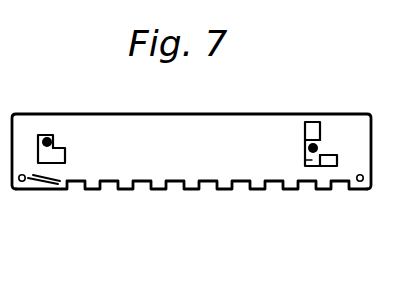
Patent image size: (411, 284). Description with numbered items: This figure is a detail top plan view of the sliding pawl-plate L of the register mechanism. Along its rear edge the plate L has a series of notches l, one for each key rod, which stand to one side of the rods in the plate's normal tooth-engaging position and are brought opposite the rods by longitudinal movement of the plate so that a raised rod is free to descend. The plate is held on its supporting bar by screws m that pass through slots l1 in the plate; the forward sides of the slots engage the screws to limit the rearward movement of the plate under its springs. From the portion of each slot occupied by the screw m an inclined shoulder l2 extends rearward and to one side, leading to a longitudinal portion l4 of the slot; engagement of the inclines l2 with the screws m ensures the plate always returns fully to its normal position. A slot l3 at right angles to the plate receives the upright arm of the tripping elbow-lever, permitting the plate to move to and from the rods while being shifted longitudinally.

The pawl-plate L is at (191, 151).
The notches l is at (83, 189).
The slots l1 is at (38, 147).
The inclined shoulder l2 is at (54, 152).
The slot l3 is at (315, 121).
The longitudinal portions of the slots l4 is at (306, 157).
The screws m is at (53, 131).